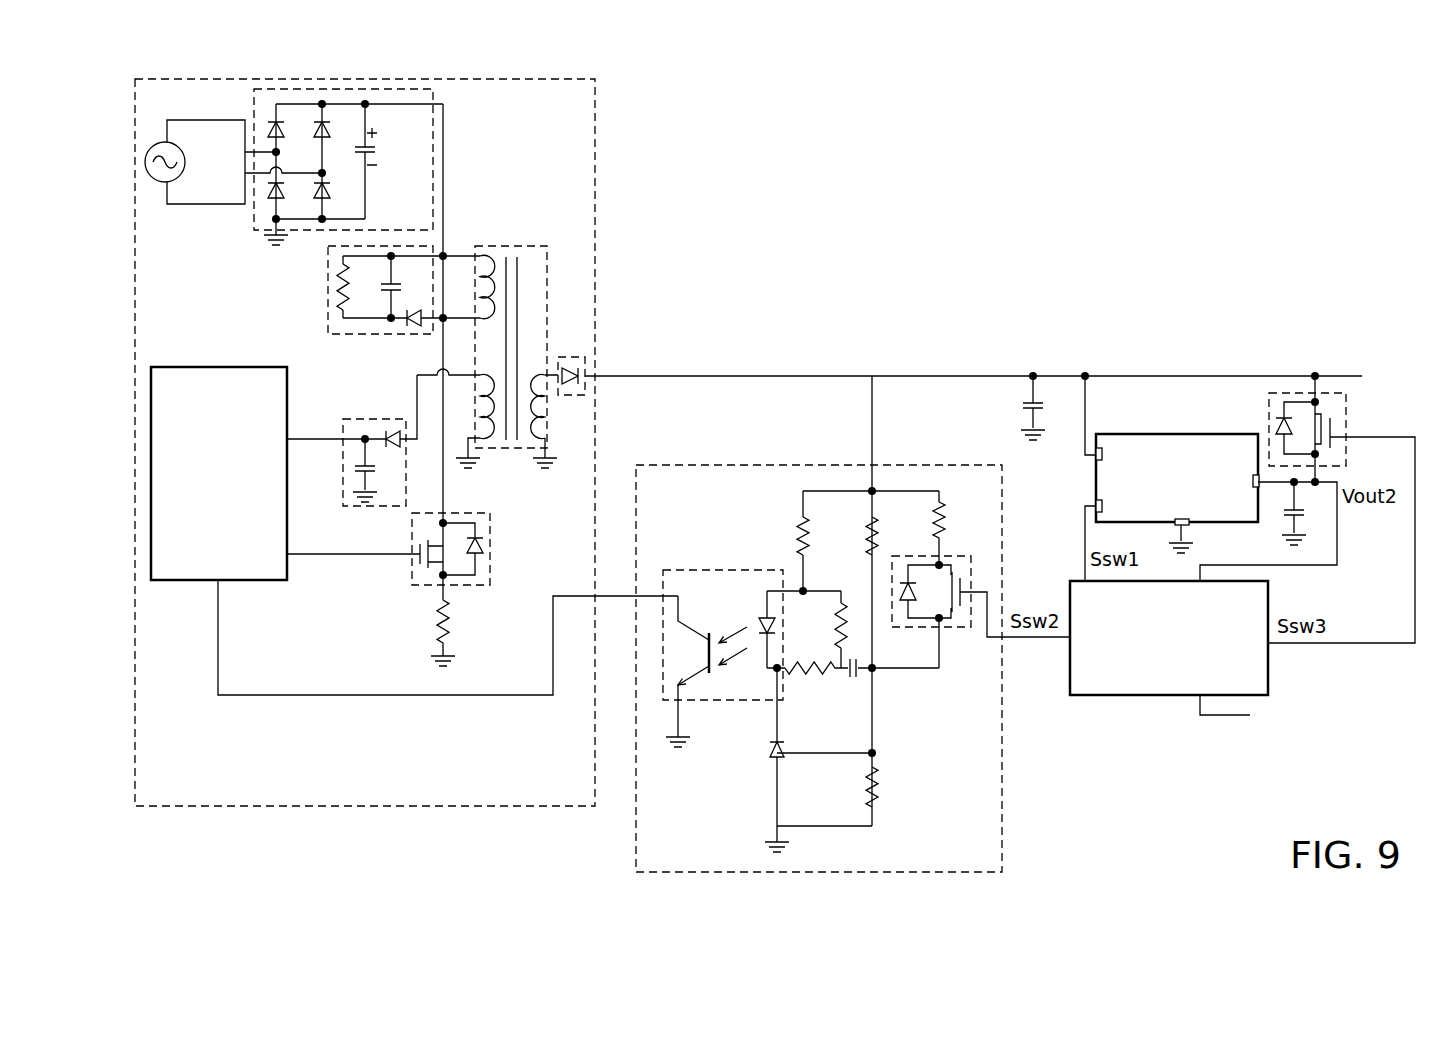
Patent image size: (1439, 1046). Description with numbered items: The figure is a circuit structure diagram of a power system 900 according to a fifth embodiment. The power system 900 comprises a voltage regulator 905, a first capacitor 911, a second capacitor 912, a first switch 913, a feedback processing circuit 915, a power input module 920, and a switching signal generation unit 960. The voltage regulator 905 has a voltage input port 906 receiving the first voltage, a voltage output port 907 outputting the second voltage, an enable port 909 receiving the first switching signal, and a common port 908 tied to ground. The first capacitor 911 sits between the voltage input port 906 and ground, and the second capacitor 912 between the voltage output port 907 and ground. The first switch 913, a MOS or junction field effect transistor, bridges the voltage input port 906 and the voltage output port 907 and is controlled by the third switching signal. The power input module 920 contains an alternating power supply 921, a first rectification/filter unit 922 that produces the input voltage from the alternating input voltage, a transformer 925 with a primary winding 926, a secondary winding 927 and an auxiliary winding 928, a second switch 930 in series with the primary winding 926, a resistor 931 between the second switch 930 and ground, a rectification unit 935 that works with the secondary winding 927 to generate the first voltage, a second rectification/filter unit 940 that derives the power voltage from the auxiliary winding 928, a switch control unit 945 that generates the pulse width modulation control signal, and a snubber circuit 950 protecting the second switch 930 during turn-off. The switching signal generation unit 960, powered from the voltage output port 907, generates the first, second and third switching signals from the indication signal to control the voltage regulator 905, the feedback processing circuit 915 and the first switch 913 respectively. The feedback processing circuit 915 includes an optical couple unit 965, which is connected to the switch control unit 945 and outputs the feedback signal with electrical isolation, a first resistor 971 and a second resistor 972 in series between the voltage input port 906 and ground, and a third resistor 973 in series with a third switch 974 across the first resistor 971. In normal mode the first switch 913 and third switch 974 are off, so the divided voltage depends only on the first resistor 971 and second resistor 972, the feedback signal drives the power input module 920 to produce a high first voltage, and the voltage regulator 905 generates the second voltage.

The power system 900 is at (1231, 143).
The voltage regulator 905 is at (1183, 434).
The voltage input port 906 is at (1102, 448).
The voltage output port 907 is at (1254, 475).
The common port 908 is at (1190, 523).
The enable port 909 is at (1096, 496).
The first capacitor 911 is at (1022, 403).
The second capacitor 912 is at (1305, 512).
The first switch 913 is at (1331, 392).
The feedback processing circuit 915 is at (937, 465).
The power input module 920 is at (595, 125).
The alternating power supply 921 is at (160, 142).
The first rectification/filter unit 922 is at (350, 89).
The transformer 925 is at (546, 331).
The primary winding 926 is at (469, 256).
The secondary winding 927 is at (543, 446).
The auxiliary winding 928 is at (482, 446).
The second switch 930 is at (490, 548).
The resistor 931 is at (450, 628).
The rectification unit 935 is at (580, 357).
The second rectification/filter unit 940 is at (375, 419).
The switch control unit 945 is at (222, 367).
The snubber circuit 950 is at (328, 298).
The switching signal generation unit 960 is at (1113, 697).
The optical couple unit 965 is at (733, 570).
The first resistor 971 is at (878, 537).
The second resistor 972 is at (864, 791).
The third resistor 973 is at (943, 525).
The third switch 974 is at (955, 630).